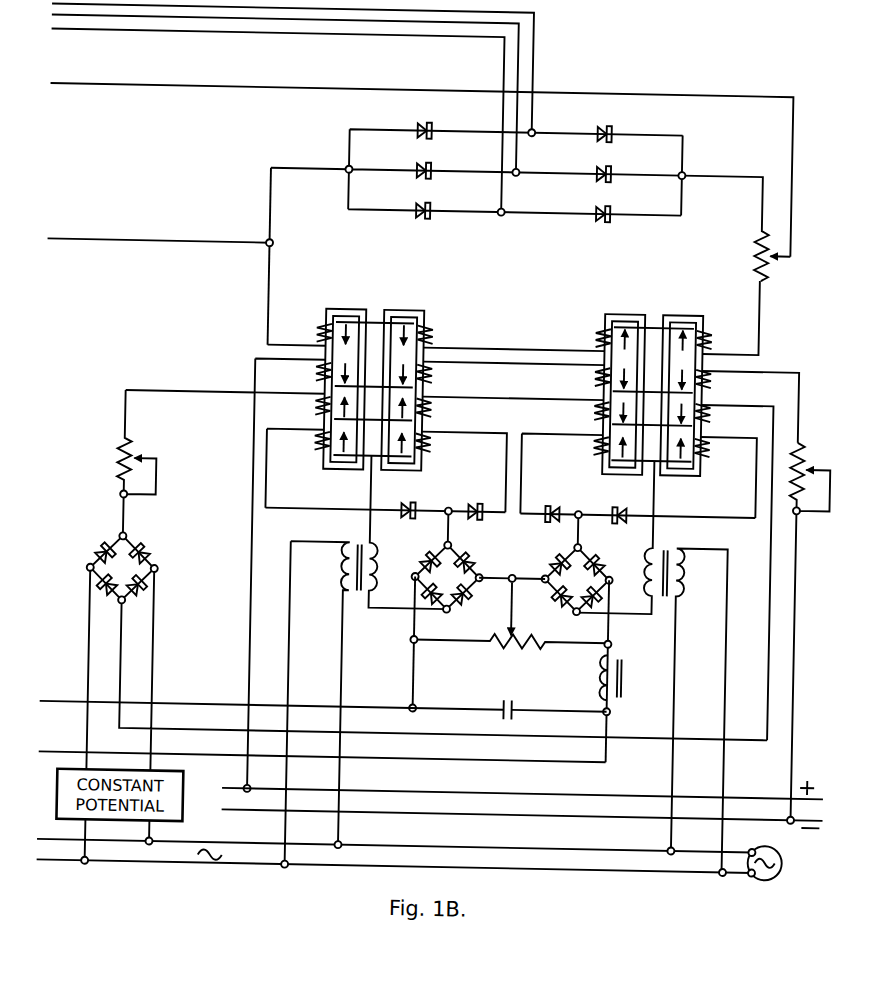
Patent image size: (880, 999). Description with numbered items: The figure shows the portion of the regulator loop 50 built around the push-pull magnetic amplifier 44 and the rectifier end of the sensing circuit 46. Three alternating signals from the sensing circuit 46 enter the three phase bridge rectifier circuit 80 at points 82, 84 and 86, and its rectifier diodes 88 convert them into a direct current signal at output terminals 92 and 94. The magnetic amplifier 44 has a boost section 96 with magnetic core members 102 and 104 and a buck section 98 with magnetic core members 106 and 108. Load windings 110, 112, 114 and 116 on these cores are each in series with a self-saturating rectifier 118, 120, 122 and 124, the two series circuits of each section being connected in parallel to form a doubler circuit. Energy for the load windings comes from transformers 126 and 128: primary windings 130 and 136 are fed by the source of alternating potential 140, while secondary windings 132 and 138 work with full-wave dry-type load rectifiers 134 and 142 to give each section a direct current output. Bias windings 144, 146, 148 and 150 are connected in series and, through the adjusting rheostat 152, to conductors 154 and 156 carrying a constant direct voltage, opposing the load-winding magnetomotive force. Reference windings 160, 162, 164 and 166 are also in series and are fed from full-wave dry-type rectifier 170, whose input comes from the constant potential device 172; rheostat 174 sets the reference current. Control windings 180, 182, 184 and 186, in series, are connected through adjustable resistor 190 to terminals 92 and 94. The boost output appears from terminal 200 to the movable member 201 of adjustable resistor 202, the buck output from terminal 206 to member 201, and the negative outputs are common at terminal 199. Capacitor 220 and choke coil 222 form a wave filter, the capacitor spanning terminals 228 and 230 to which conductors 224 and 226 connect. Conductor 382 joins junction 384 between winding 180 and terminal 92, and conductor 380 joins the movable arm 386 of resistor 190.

The push-pull magnetic amplifier 44 is at (508, 331).
The sensing circuit 46 is at (318, 70).
The regulator loop 50 is at (161, 314).
The three phase bridge rectifier circuit 80 is at (499, 246).
The point 82 is at (529, 130).
The point 84 is at (514, 170).
The point 86 is at (500, 210).
The rectifier diodes 88 is at (408, 202).
The output terminal 92 is at (338, 170).
The output terminal 94 is at (680, 170).
The boost section 96 is at (360, 302).
The buck section 98 is at (640, 302).
The magnetic core member 102 is at (329, 312).
The magnetic core member 104 is at (404, 313).
The magnetic core member 106 is at (607, 312).
The magnetic core member 108 is at (682, 313).
The load winding 110 is at (304, 469).
The load winding 112 is at (419, 471).
The load winding 114 is at (571, 475).
The load winding 116 is at (683, 476).
The self-saturating rectifier 118 is at (414, 503).
The self-saturating rectifier 120 is at (477, 503).
The self-saturating rectifier 122 is at (553, 505).
The self-saturating rectifier 124 is at (619, 505).
The transformer 126 is at (358, 544).
The transformer 128 is at (672, 540).
The primary winding 130 is at (343, 569).
The secondary winding 132 is at (380, 568).
The full-wave dry-type load rectifier 134 is at (437, 587).
The primary winding 136 is at (678, 573).
The secondary winding 138 is at (648, 572).
The source of alternating potential 140 is at (790, 850).
The full-wave dry-type load rectifier 142 is at (567, 587).
The bias winding 144 is at (296, 574).
The bias winding 146 is at (470, 378).
The bias winding 148 is at (589, 381).
The bias winding 150 is at (705, 405).
The adjusting rheostat 152 is at (799, 458).
The conductor 154 is at (522, 780).
The conductor 156 is at (521, 827).
The reference winding 160 is at (234, 406).
The reference winding 162 is at (469, 412).
The reference winding 164 is at (589, 414).
The reference winding 166 is at (689, 571).
The full-wave dry-type rectifier 170 is at (112, 584).
The constant potential device 172 is at (189, 798).
The rheostat 174 is at (133, 450).
The control winding 180 is at (307, 331).
The control winding 182 is at (471, 334).
The control winding 184 is at (589, 337).
The control winding 186 is at (686, 316).
The adjustable resistor 190 is at (751, 243).
The terminal 199 is at (517, 573).
The output terminal 200 is at (413, 640).
The movable member 201 is at (520, 628).
The adjustable resistor 202 is at (510, 656).
The output terminal 206 is at (615, 639).
The capacitor 220 is at (520, 708).
The choke coil 222 is at (627, 672).
The conductor 224 is at (69, 758).
The conductor 226 is at (68, 708).
The terminal 228 is at (414, 705).
The terminal 230 is at (615, 711).
The output conductor 380 is at (124, 90).
The output conductor 382 is at (104, 245).
The junction 384 is at (270, 246).
The movable arm 386 is at (780, 254).